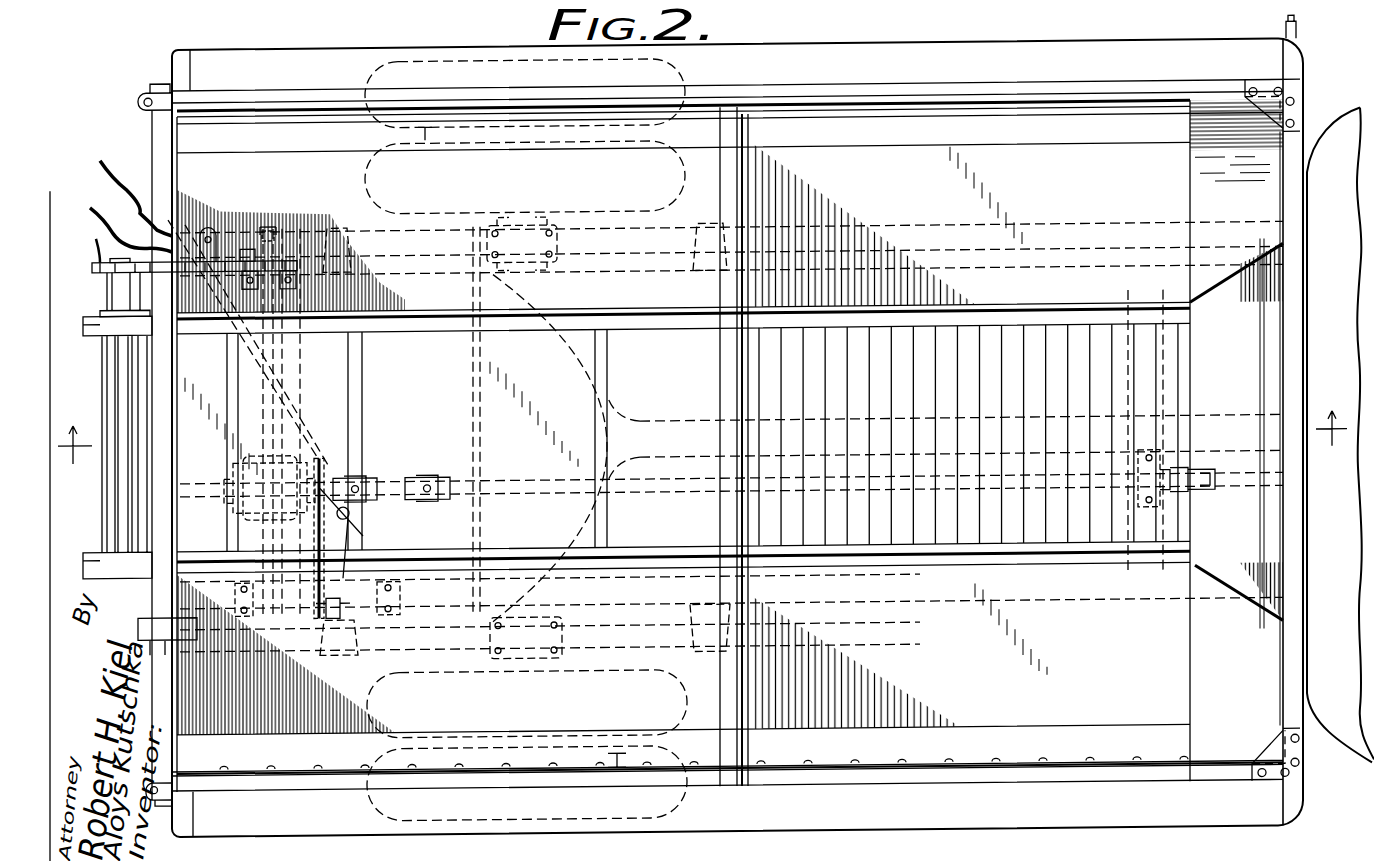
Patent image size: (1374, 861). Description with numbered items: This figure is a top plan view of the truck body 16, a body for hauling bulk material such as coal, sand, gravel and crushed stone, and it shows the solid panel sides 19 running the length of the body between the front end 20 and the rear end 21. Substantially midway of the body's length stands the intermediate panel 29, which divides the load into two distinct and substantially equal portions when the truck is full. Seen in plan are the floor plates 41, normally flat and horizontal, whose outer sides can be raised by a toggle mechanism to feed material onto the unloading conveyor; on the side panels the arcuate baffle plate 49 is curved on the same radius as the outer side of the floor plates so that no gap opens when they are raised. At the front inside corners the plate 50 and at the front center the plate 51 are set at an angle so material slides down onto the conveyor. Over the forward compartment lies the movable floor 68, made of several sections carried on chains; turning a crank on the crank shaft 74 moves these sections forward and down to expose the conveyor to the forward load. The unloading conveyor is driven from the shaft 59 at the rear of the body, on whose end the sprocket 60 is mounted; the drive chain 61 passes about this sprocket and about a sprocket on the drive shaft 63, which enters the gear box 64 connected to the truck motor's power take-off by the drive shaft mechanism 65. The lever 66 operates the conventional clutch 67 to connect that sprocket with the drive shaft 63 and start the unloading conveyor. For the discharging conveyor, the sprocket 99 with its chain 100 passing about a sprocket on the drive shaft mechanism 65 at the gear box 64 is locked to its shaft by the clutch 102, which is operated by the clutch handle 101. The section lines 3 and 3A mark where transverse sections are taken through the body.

The truck body 16 is at (1315, 89).
The crank shaft 74 is at (1294, 44).
The solid panel sides 19 is at (930, 108).
The rear end 21 is at (176, 187).
The intermediate panel 29 is at (737, 196).
The floor plates 41 is at (1140, 652).
The arcuate baffle plate 49 is at (610, 150).
The plate 50 is at (1212, 190).
The front end 20 is at (1282, 240).
The plate 51 is at (1223, 354).
The movable floor 68 is at (1035, 345).
The drive shaft mechanism 65 is at (385, 480).
The clutch 67 is at (282, 234).
The drive shaft 63 is at (270, 361).
The gear box 64 is at (275, 496).
The chain 100 is at (312, 538).
The sprocket 99 is at (318, 620).
The clutch 102 is at (318, 634).
The drive chain 61 is at (92, 268).
The shaft 59 is at (107, 291).
The sprocket 60 is at (79, 244).
The lever 66 is at (113, 220).
The clutch handle 101 is at (125, 187).
The section line 3 is at (75, 461).
The section line 3A is at (1331, 442).